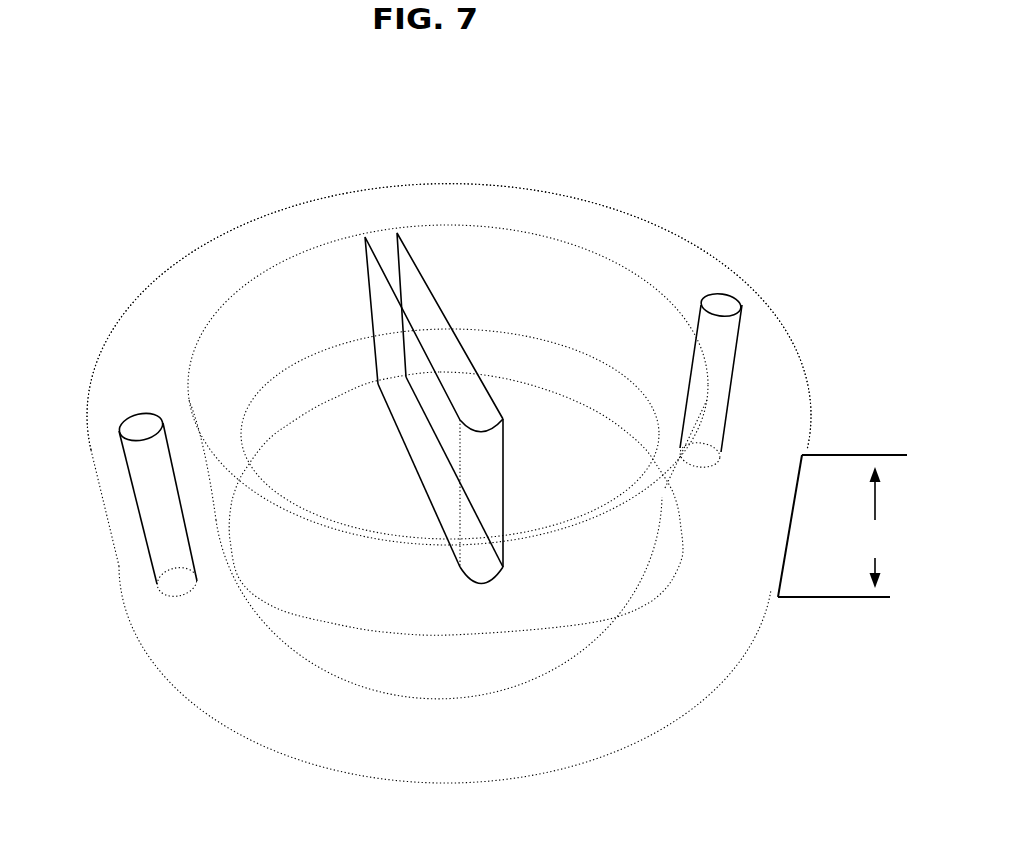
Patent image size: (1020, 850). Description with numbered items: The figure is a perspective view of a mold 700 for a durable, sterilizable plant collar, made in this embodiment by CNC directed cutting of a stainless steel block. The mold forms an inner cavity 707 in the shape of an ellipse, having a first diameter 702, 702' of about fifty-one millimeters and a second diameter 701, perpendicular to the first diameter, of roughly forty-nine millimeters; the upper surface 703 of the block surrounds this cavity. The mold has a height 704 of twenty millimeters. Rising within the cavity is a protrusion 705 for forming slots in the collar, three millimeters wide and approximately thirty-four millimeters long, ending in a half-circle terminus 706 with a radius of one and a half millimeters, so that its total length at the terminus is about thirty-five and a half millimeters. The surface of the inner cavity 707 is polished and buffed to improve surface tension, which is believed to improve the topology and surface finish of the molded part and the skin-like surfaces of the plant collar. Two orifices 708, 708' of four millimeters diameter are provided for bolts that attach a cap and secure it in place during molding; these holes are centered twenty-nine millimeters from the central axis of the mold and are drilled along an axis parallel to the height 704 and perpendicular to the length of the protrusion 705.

The test fixture assembly 700 is at (170, 158).
The second diameter 701 is at (542, 533).
The first diameter 702 is at (361, 385).
The first diameter 702' is at (497, 446).
The top surface of base 703 is at (214, 234).
The height 704 is at (842, 526).
The protrusion 705 is at (367, 232).
The half-circle terminus 706 is at (478, 410).
The inner cavity 707 is at (404, 388).
The orifice 708 is at (267, 371).
The orifice 708' is at (749, 359).